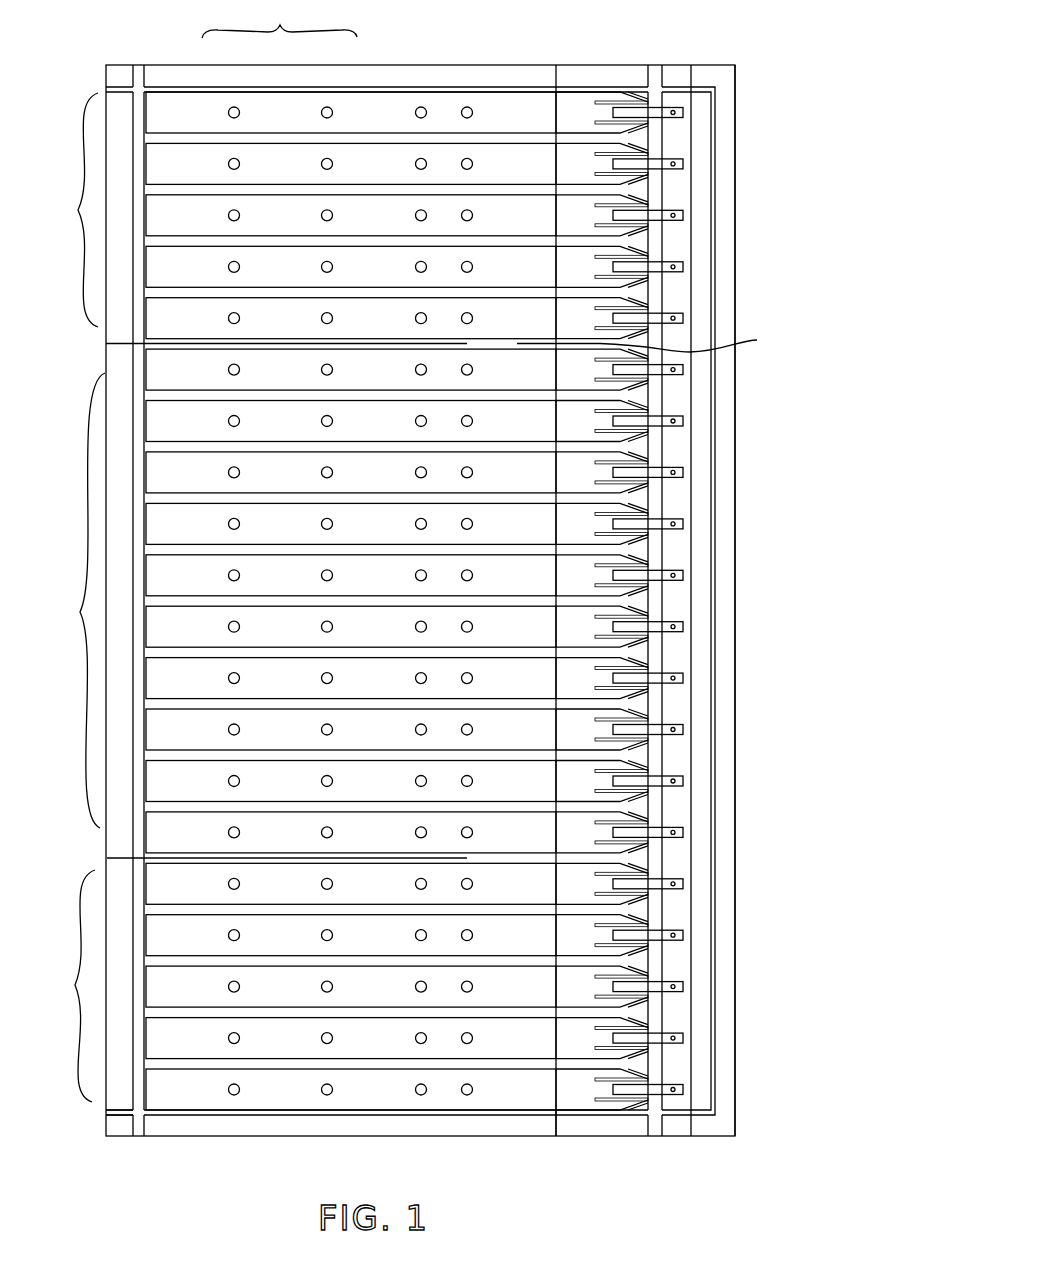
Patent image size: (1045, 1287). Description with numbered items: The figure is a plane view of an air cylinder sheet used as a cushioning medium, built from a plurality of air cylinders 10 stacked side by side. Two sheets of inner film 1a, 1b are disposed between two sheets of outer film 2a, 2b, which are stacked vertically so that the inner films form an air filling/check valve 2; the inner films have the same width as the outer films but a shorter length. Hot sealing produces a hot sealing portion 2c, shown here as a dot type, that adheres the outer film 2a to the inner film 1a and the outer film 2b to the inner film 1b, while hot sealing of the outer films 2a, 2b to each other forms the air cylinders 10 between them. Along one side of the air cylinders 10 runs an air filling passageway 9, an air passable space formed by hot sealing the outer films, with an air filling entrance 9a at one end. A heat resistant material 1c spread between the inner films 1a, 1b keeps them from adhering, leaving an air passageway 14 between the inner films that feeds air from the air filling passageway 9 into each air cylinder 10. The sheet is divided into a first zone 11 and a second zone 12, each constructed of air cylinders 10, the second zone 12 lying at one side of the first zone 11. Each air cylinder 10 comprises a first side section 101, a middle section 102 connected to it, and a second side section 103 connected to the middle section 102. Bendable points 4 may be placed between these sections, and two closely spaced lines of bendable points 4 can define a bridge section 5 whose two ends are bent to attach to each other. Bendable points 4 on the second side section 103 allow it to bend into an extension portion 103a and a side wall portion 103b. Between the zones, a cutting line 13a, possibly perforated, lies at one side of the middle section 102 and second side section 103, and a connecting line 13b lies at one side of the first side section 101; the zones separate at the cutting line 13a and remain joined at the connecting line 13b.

The inner film 1a is at (680, 752).
The inner film 1b is at (703, 761).
The heat resistant material 1c is at (662, 163).
The air filling/check valve 2 is at (563, 1093).
The outer film 2a is at (192, 1127).
The outer film 2b is at (192, 1147).
The hot sealing portion 2c is at (673, 113).
The bendable points 4 is at (325, 1096).
The bridge section 5 is at (446, 1095).
The air filling passageway 9 is at (697, 858).
The air filling entrance 9a is at (681, 1118).
The air cylinders 10 is at (178, 880).
The first zone 11 is at (365, 588).
The second zone 12 is at (365, 216).
The cutting line 13a is at (133, 344).
The connecting line 13b is at (653, 346).
The air passageway 14 is at (605, 1088).
The first side section 101 is at (513, 115).
The middle section 102 is at (362, 115).
The second side section 103 is at (279, 19).
The extension portion 103a is at (185, 117).
The side wall portion 103b is at (272, 115).